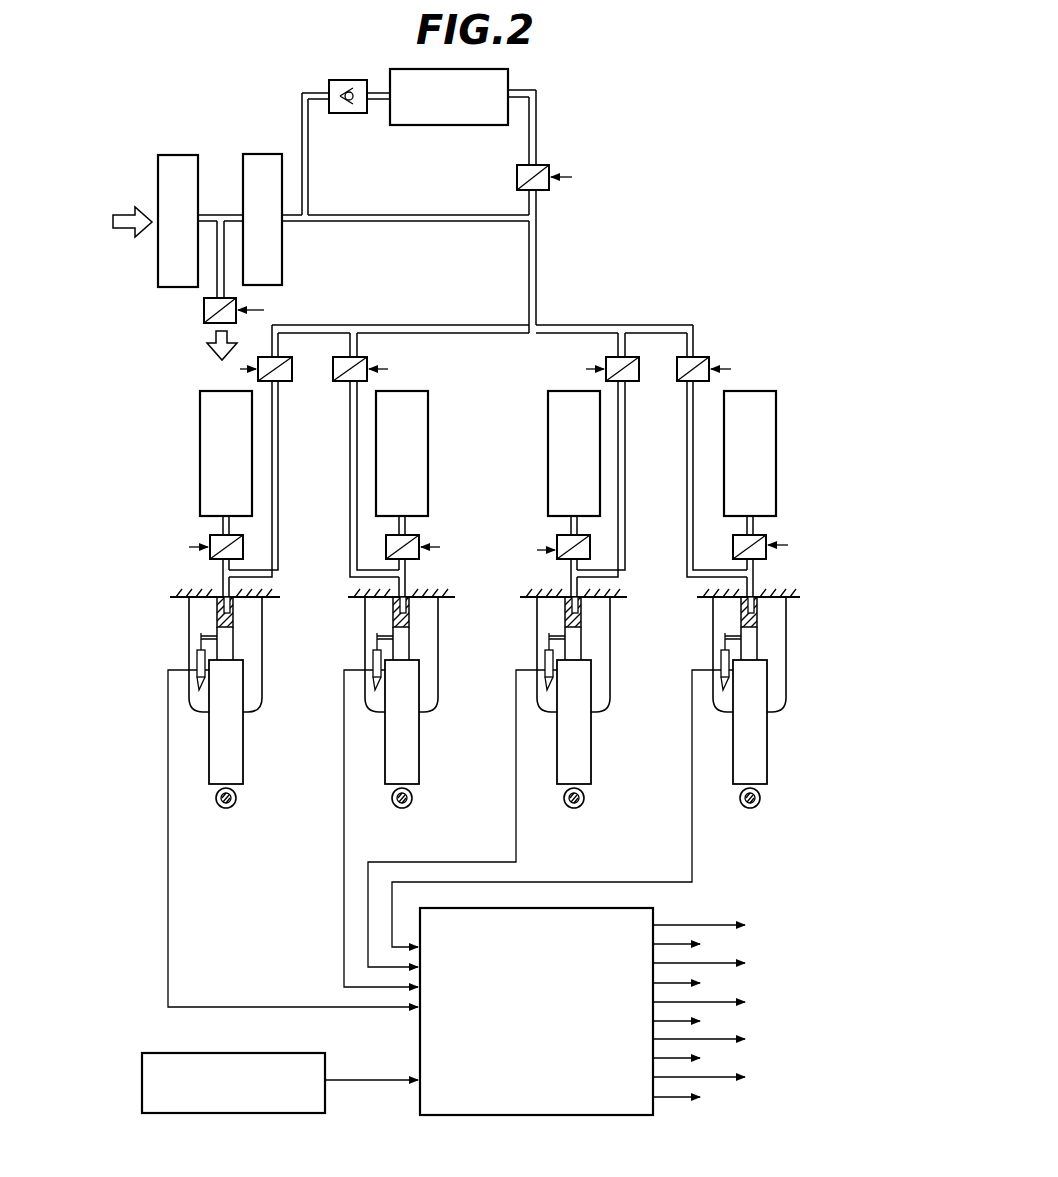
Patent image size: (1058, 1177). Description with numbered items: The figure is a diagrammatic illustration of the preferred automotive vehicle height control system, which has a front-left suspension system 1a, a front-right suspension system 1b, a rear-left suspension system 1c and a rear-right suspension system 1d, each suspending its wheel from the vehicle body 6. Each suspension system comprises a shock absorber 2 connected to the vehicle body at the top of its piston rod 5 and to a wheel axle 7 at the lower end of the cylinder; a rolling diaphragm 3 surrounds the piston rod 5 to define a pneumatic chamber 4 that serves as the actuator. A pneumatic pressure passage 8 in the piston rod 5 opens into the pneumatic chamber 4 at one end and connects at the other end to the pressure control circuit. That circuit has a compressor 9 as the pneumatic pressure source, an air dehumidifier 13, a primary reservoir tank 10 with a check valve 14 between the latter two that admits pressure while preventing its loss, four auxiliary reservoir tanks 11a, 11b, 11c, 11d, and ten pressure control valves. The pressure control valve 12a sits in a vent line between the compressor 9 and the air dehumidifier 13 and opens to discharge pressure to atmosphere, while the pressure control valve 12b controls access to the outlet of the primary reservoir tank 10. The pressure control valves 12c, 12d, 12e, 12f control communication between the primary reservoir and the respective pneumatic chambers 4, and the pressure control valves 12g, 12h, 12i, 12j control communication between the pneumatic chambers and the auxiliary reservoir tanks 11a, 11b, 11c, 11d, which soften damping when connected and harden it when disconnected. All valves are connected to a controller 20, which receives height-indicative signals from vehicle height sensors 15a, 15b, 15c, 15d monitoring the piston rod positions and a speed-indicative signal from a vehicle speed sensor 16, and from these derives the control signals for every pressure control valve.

The front-left suspension system 1a is at (250, 714).
The front-right suspension system 1b is at (426, 714).
The rear-left suspension system 1c is at (598, 714).
The rear-right suspension system 1d is at (774, 714).
The shock absorber 2 is at (244, 777).
The rolling diaphragm 3 is at (263, 692).
The pneumatic chamber 4 is at (250, 667).
The piston rod 5 is at (234, 643).
The vehicle body 6 is at (178, 594).
The wheel axle 7 is at (237, 801).
The pneumatic pressure passage 8 is at (234, 613).
The compressor 9 is at (181, 155).
The primary reservoir tank 10 is at (481, 125).
The auxiliary reservoir tank 11a is at (200, 411).
The auxiliary reservoir tank 11b is at (428, 410).
The auxiliary reservoir tank 11c is at (548, 402).
The auxiliary reservoir tank 11d is at (777, 404).
The pressure control valve 12a is at (204, 312).
The pressure control valve 12b is at (517, 178).
The pressure control valve 12c is at (291, 378).
The pressure control valve 12d is at (335, 381).
The pressure control valve 12e is at (638, 376).
The pressure control valve 12f is at (678, 381).
The pressure control valve 12g is at (210, 541).
The pressure control valve 12h is at (419, 538).
The pressure control valve 12i is at (557, 535).
The pressure control valve 12j is at (766, 536).
The air dehumidifier 13 is at (262, 154).
The check valve 14 is at (352, 113).
The vehicle height sensor 15a is at (197, 661).
The vehicle height sensor 15b is at (373, 660).
The vehicle height sensor 15c is at (545, 660).
The vehicle height sensor 15d is at (721, 658).
The vehicle speed sensor 16 is at (170, 1053).
The controller 20 is at (420, 1027).